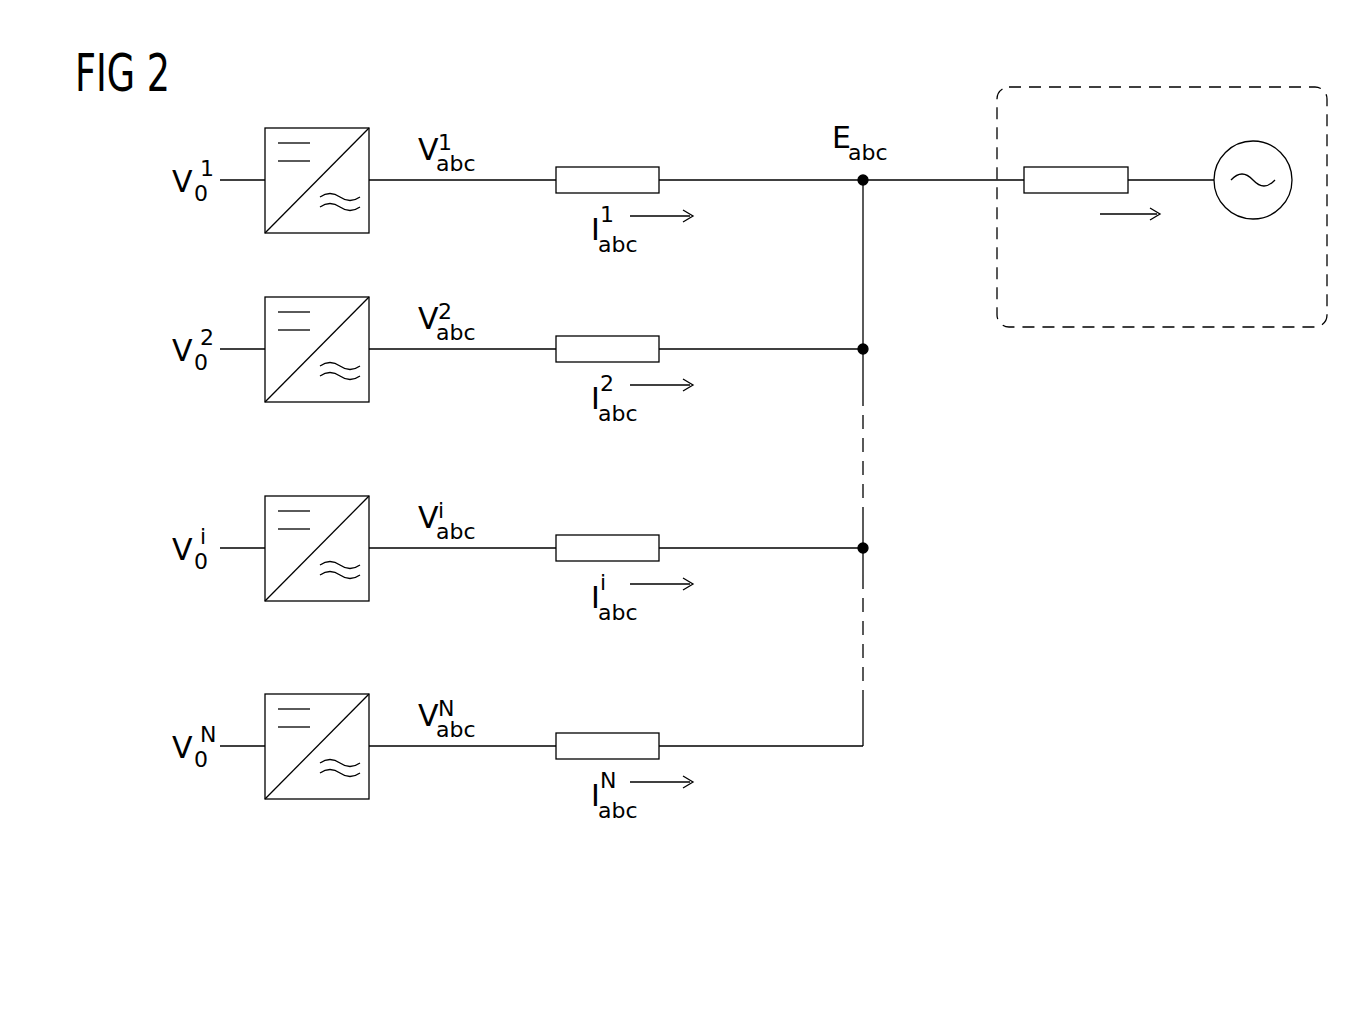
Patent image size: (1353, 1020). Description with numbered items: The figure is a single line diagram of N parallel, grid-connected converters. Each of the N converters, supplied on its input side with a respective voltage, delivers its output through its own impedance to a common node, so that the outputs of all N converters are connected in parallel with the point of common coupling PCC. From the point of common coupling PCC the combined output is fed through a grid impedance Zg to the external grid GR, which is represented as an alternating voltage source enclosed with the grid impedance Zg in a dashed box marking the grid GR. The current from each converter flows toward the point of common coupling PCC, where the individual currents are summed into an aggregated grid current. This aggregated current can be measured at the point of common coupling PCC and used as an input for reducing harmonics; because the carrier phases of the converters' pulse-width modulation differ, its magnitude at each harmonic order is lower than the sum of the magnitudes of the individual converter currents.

The point of common coupling PCC is at (882, 198).
The external grid GR is at (1162, 188).
The grid impedance Zg is at (1076, 155).